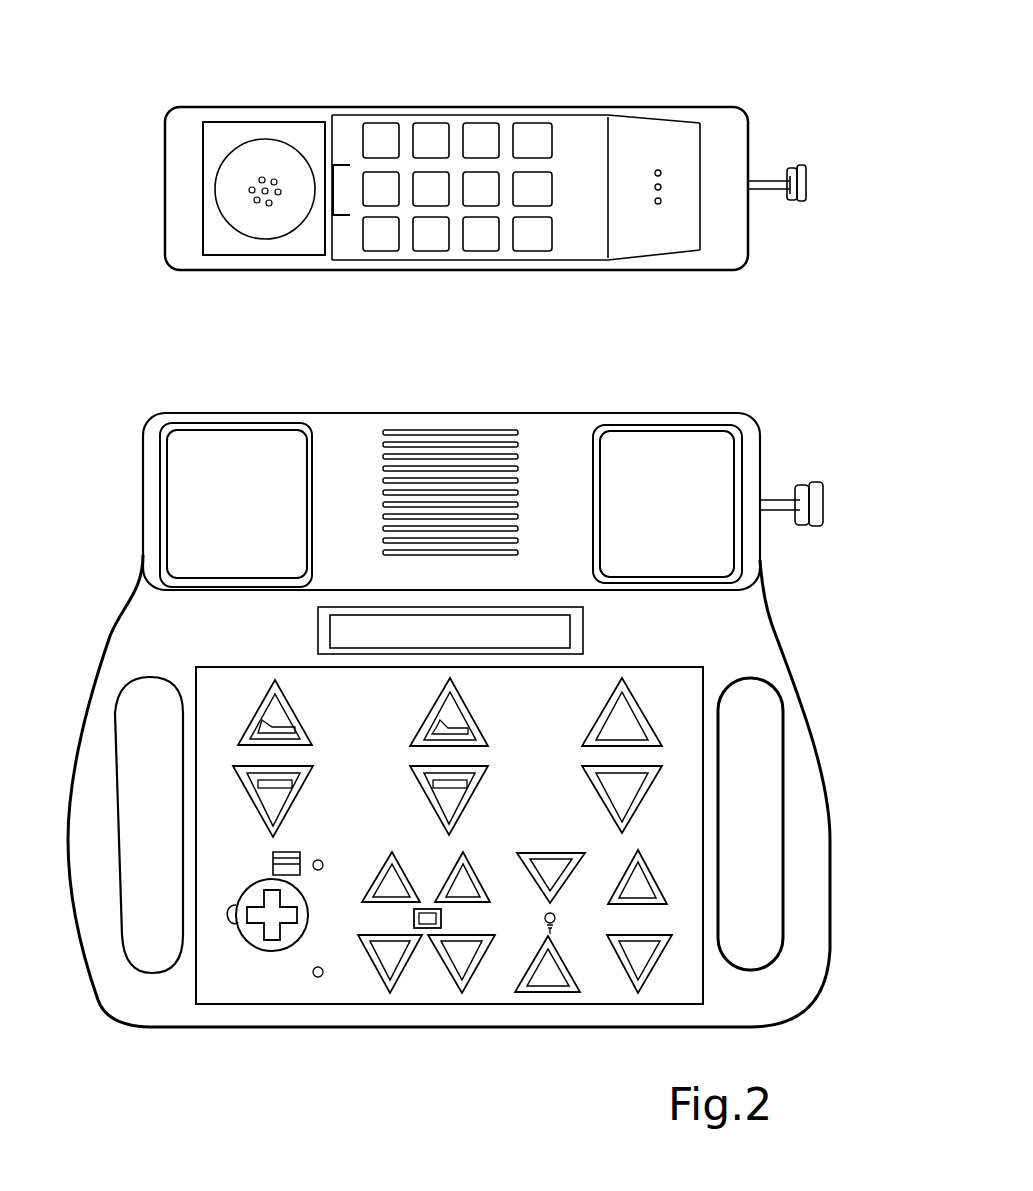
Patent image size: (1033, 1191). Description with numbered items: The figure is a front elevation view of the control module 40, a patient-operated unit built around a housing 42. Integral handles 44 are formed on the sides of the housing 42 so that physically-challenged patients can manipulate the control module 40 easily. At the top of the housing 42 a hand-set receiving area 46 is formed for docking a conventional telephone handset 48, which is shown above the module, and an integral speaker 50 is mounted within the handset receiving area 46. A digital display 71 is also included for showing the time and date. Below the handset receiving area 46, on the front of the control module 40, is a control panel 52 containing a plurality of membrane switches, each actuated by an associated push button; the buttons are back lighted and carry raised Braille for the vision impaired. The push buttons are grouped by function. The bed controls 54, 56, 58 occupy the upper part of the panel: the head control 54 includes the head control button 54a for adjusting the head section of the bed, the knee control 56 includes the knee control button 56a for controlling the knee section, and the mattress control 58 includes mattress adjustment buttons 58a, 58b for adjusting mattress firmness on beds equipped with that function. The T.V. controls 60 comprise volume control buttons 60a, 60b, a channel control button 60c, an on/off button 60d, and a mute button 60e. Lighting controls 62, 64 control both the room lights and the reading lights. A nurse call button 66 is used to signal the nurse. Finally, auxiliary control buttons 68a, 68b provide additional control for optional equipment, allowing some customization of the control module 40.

The telephone handset 48 is at (497, 88).
The control module 40 is at (88, 440).
The housing 42 is at (113, 622).
The handles 44 is at (108, 838).
The hand-set receiving area 46 is at (548, 448).
The speaker 50 is at (455, 430).
The digital display 71 is at (583, 632).
The control panel 52 is at (690, 663).
The bed control 54 is at (240, 757).
The head control button 54a is at (278, 714).
The bed control 56 is at (332, 756).
The knee control button 56a is at (468, 712).
The bed control 58 is at (719, 730).
The mattress adjustment button 58a is at (632, 706).
The mattress adjustment button 58b is at (674, 799).
The T.V. controls 60 is at (362, 950).
The volume control button 60a is at (382, 885).
The volume control button 60b is at (425, 910).
The channel control button 60c is at (455, 882).
The on/off button 60d is at (380, 960).
The mute button 60e is at (460, 960).
The lighting control 62 is at (515, 952).
The lighting control 64 is at (545, 1003).
The nurse call button 66 is at (232, 960).
The auxiliary control button 68a is at (650, 892).
The auxiliary control button 68b is at (637, 960).